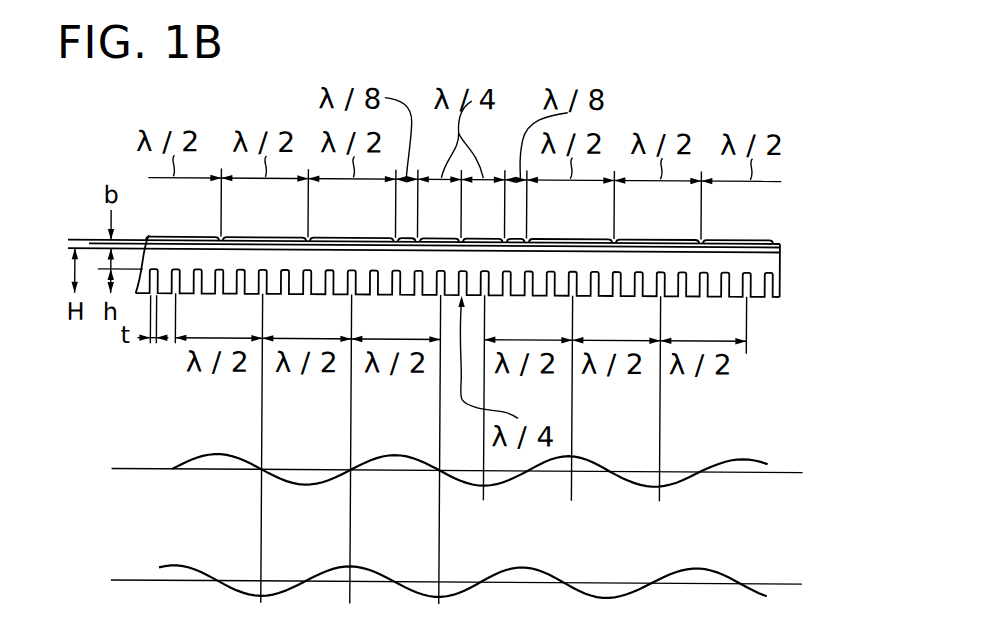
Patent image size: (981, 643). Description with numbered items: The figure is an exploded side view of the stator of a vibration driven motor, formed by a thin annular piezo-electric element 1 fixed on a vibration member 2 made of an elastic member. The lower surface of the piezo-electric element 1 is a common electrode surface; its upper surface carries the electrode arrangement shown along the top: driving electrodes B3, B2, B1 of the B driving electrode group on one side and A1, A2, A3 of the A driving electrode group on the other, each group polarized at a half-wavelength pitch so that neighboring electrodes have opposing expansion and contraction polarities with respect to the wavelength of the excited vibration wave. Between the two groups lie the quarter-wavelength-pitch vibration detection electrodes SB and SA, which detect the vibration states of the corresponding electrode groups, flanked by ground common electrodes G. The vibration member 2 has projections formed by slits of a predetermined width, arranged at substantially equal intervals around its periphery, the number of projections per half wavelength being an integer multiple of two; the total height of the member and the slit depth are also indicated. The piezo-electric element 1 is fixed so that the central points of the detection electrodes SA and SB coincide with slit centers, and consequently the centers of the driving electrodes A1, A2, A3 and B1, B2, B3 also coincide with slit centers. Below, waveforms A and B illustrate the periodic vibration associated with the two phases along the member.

The piezo-electric element 1 is at (767, 243).
The vibration member 2 is at (774, 288).
The A driving electrode A1 is at (570, 224).
The A driving electrode A2 is at (657, 225).
The A driving electrode A3 is at (738, 225).
The B driving electrode B1 is at (352, 223).
The B driving electrode B2 is at (264, 223).
The B driving electrode B3 is at (182, 221).
The ground common electrode G is at (462, 224).
The vibration detection electrode SA is at (483, 223).
The vibration detection electrode SB is at (439, 223).
The A-phase output waveform A is at (473, 473).
The B-phase output waveform B is at (473, 584).